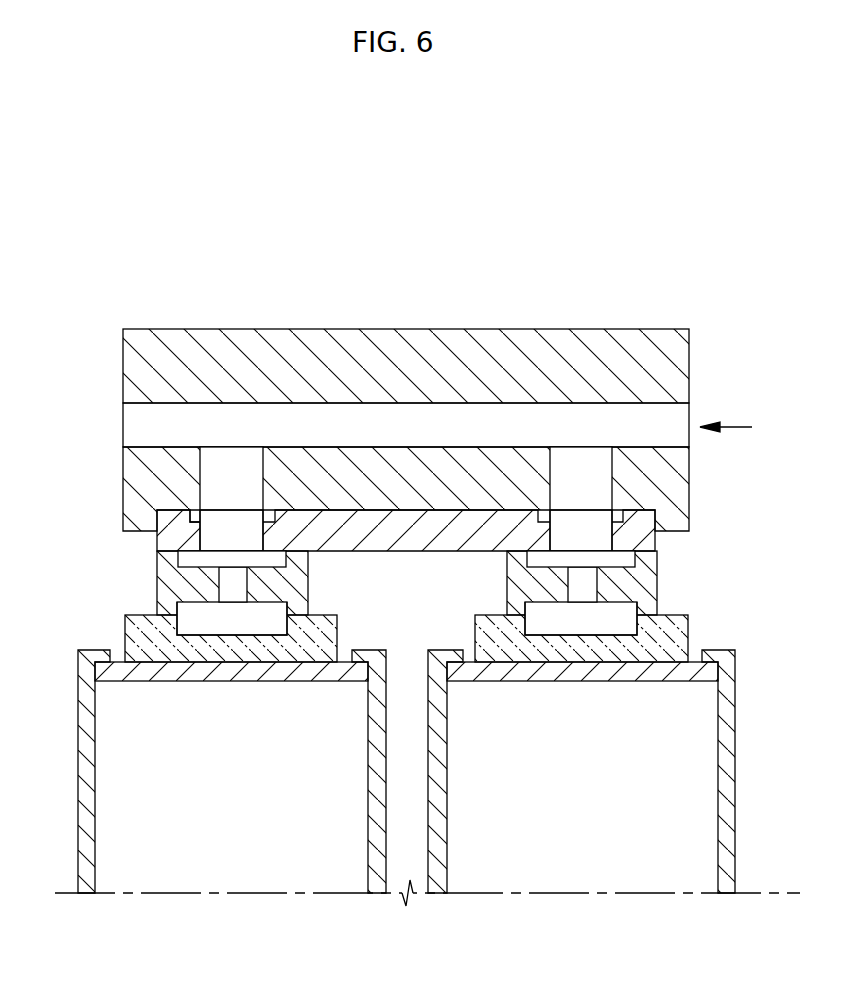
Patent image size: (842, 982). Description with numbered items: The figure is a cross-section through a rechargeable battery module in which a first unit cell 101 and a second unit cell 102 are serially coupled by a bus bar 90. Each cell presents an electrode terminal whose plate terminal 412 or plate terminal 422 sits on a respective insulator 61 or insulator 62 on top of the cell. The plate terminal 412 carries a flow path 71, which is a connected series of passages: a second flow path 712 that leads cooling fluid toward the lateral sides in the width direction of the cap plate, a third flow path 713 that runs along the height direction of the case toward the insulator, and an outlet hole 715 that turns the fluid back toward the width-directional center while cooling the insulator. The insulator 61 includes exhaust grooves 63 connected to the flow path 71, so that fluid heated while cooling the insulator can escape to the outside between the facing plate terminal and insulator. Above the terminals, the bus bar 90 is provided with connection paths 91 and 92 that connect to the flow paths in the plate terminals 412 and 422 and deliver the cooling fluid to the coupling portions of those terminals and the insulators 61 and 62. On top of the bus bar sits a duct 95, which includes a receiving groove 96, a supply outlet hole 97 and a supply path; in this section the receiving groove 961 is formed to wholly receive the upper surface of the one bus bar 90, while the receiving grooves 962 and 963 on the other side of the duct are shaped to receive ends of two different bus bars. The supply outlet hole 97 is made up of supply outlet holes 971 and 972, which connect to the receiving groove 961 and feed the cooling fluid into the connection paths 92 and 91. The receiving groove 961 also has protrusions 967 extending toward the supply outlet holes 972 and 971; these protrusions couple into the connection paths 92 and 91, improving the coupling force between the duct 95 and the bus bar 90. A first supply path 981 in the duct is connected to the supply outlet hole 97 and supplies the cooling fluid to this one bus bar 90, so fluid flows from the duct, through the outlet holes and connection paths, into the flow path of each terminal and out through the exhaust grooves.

The duct 95 is at (291, 329).
The first supply path 981 is at (387, 420).
The receiving groove 96 is at (406, 361).
The receiving groove 961 is at (423, 518).
The receiving groove 962 is at (406, 382).
The receiving groove 963 is at (406, 392).
The bus bar 90 is at (648, 522).
The protrusion 967 is at (193, 515).
The supply outlet hole 97 is at (463, 383).
The supply outlet hole 971 is at (583, 470).
The supply outlet hole 972 is at (227, 468).
The connection path 92 is at (223, 518).
The connection path 91 is at (597, 519).
The plate terminal 422 is at (162, 570).
The plate terminal 412 is at (512, 569).
The insulator 62 is at (145, 637).
The insulator 61 is at (672, 637).
The flow path 71 is at (424, 410).
The second flow path 712 is at (120, 290).
The third flow path 713 is at (700, 590).
The outlet hole 715 is at (718, 616).
The exhaust groove 63 is at (183, 626).
The first unit cell 101 is at (267, 878).
The second unit cell 102 is at (587, 878).